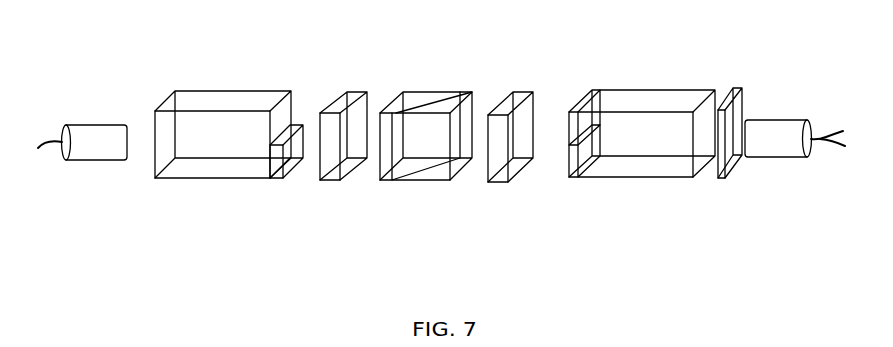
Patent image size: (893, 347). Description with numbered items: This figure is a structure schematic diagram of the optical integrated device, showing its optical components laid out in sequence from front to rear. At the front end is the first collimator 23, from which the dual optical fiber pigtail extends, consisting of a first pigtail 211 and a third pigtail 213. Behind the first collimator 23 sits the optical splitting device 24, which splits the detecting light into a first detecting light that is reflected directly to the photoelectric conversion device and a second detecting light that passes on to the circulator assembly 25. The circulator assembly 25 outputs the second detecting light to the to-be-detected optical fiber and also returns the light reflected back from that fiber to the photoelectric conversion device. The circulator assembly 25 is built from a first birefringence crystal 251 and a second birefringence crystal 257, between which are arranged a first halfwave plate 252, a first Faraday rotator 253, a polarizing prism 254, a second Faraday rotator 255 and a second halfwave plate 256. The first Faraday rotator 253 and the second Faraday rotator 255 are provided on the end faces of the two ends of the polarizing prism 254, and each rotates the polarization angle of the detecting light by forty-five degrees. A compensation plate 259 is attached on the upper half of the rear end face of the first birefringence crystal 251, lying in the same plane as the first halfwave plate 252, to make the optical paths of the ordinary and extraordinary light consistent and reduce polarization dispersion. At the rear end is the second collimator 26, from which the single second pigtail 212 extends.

The circulator assembly 25 is at (433, 72).
The first birefringence crystal 251 is at (635, 180).
The first halfwave plate 252 is at (578, 180).
The first Faraday rotator 253 is at (519, 177).
The polarizing prism 254 is at (462, 181).
The second Faraday rotator 255 is at (348, 180).
The second halfwave plate 256 is at (291, 178).
The second birefringence crystal 257 is at (212, 181).
The compensation plate 259 is at (590, 93).
The optical splitting device 24 is at (738, 158).
The first collimator 23 is at (787, 147).
The first pigtail 211 is at (832, 130).
The second pigtail 212 is at (49, 145).
The third pigtail 213 is at (840, 150).
The second collimator 26 is at (107, 148).